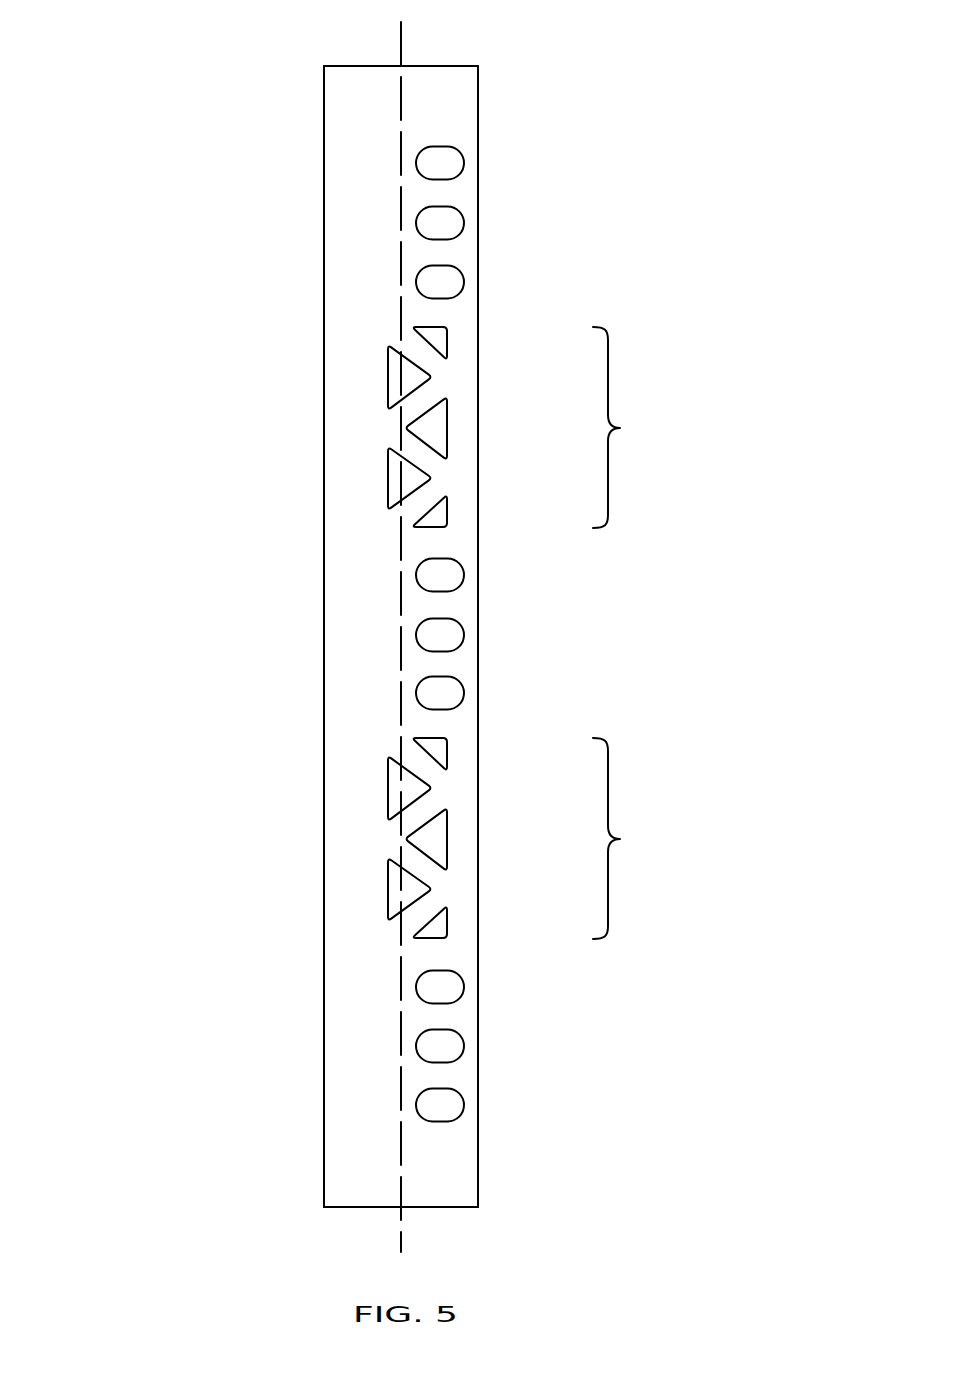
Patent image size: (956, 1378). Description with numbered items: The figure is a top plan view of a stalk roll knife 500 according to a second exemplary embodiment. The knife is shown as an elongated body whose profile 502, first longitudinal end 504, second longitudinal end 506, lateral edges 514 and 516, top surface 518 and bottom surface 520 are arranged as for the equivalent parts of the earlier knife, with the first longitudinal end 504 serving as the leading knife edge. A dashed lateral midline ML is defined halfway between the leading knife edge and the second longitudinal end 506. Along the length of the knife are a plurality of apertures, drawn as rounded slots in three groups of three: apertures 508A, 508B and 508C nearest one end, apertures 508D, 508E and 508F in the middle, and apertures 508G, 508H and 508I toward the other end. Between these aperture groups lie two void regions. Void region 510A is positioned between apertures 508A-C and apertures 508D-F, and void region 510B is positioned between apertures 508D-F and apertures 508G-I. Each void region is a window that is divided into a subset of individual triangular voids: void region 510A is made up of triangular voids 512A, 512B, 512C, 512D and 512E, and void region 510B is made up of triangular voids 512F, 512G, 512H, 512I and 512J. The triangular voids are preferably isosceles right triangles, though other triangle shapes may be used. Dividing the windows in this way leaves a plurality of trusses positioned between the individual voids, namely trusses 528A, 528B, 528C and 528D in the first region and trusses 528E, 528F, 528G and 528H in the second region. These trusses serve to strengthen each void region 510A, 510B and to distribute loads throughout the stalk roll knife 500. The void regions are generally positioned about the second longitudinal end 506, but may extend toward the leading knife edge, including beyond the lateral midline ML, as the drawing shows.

The stalk roll knife 500 is at (160, 538).
The profile 502 is at (318, 973).
The first longitudinal end 504 is at (323, 1110).
The second longitudinal end 506 is at (478, 1162).
The aperture 508A is at (464, 160).
The aperture 508B is at (464, 222).
The aperture 508C is at (464, 282).
The aperture 508D is at (450, 572).
The aperture 508E is at (464, 633).
The aperture 508F is at (464, 693).
The aperture 508G is at (464, 984).
The aperture 508H is at (464, 1045).
The aperture 508I is at (464, 1104).
The void region 510A is at (635, 427).
The void region 510B is at (635, 838).
The triangular void 512A is at (447, 342).
The triangular void 512B is at (430, 377).
The triangular void 512C is at (447, 426).
The triangular void 512D is at (430, 478).
The triangular void 512E is at (447, 513).
The triangular void 512F is at (447, 753).
The triangular void 512G is at (430, 788).
The triangular void 512H is at (447, 837).
The triangular void 512I is at (430, 889).
The triangular void 512J is at (447, 924).
The lateral edge 514 is at (347, 66).
The lateral edge 516 is at (355, 1207).
The top surface 518 is at (340, 265).
The bottom surface 520 is at (316, 153).
The truss 528A is at (408, 343).
The truss 528B is at (408, 413).
The truss 528C is at (407, 442).
The truss 528D is at (407, 515).
The truss 528E is at (408, 754).
The truss 528F is at (408, 824).
The truss 528G is at (407, 853).
The truss 528H is at (407, 926).
The lateral midline ML is at (402, 97).